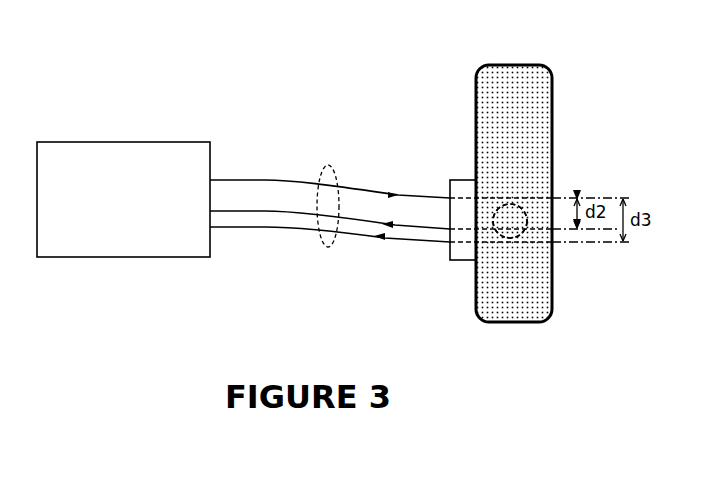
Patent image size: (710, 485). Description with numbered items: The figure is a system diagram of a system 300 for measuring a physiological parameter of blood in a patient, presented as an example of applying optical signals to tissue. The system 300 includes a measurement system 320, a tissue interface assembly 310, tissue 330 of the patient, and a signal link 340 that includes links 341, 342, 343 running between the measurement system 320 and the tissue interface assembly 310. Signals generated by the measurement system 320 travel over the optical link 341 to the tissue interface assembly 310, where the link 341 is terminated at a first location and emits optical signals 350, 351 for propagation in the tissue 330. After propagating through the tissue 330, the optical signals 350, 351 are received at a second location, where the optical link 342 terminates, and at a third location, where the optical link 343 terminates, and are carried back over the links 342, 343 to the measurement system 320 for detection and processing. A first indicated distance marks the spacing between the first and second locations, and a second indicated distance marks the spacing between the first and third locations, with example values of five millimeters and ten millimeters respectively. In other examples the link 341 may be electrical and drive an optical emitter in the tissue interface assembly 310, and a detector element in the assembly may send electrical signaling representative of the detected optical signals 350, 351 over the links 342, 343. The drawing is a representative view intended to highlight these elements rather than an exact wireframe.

The system 300 is at (82, 80).
The measurement system 320 is at (141, 233).
The optical link 341 is at (227, 178).
The optical link 342 is at (250, 212).
The optical link 343 is at (227, 228).
The signal link 340 is at (328, 163).
The tissue interface assembly 310 is at (460, 262).
The tissue 330 is at (487, 323).
The optical signal 350 is at (530, 211).
The optical signal 351 is at (551, 201).